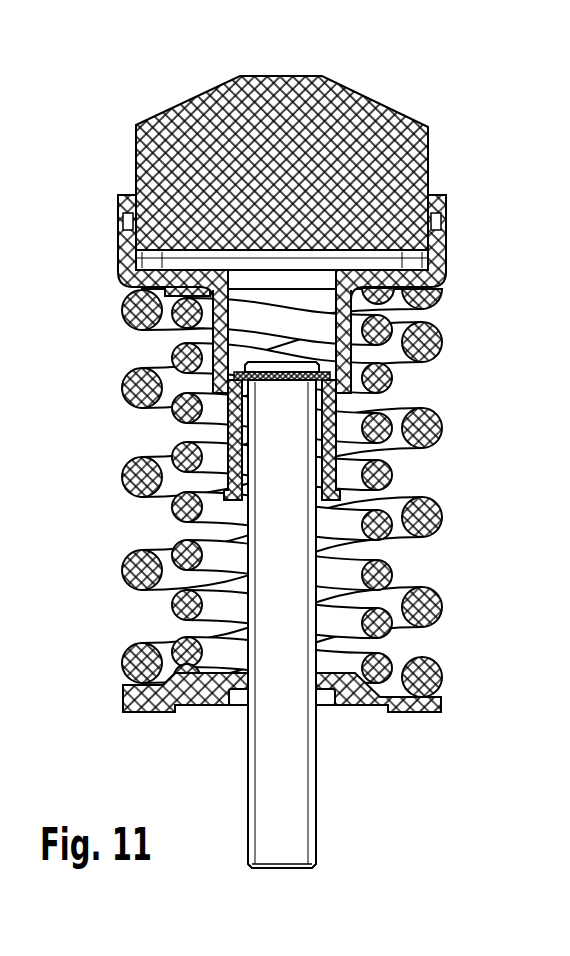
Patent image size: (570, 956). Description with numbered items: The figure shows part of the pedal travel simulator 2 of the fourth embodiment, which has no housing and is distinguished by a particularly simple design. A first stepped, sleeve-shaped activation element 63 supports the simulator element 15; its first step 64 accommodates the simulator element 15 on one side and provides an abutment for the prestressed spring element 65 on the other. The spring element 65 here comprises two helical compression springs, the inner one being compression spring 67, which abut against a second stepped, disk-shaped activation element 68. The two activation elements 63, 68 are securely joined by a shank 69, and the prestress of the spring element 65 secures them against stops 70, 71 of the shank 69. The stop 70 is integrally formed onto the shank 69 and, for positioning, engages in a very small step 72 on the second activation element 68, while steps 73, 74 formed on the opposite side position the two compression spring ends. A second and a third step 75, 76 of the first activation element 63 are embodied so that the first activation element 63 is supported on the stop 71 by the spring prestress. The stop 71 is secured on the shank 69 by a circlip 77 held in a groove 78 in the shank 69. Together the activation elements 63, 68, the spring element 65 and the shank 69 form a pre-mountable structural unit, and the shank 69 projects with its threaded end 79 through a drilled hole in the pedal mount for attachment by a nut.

The pedal travel simulator 2 is at (309, 455).
The simulator element 15 is at (392, 162).
The first activation element 63 is at (455, 263).
The first step 64 is at (309, 294).
The spring element 65 is at (309, 492).
The helical compression spring 67 is at (380, 477).
The second activation element 68 is at (377, 700).
The shank 69 is at (346, 633).
The stop 70 is at (322, 708).
The stop 71 is at (206, 440).
The step 72 is at (243, 706).
The step 73 is at (432, 677).
The step 74 is at (335, 741).
The second step 75 is at (150, 322).
The third step 76 is at (226, 425).
The circlip 77 is at (214, 372).
The groove 78 is at (298, 372).
The end 79 is at (320, 871).